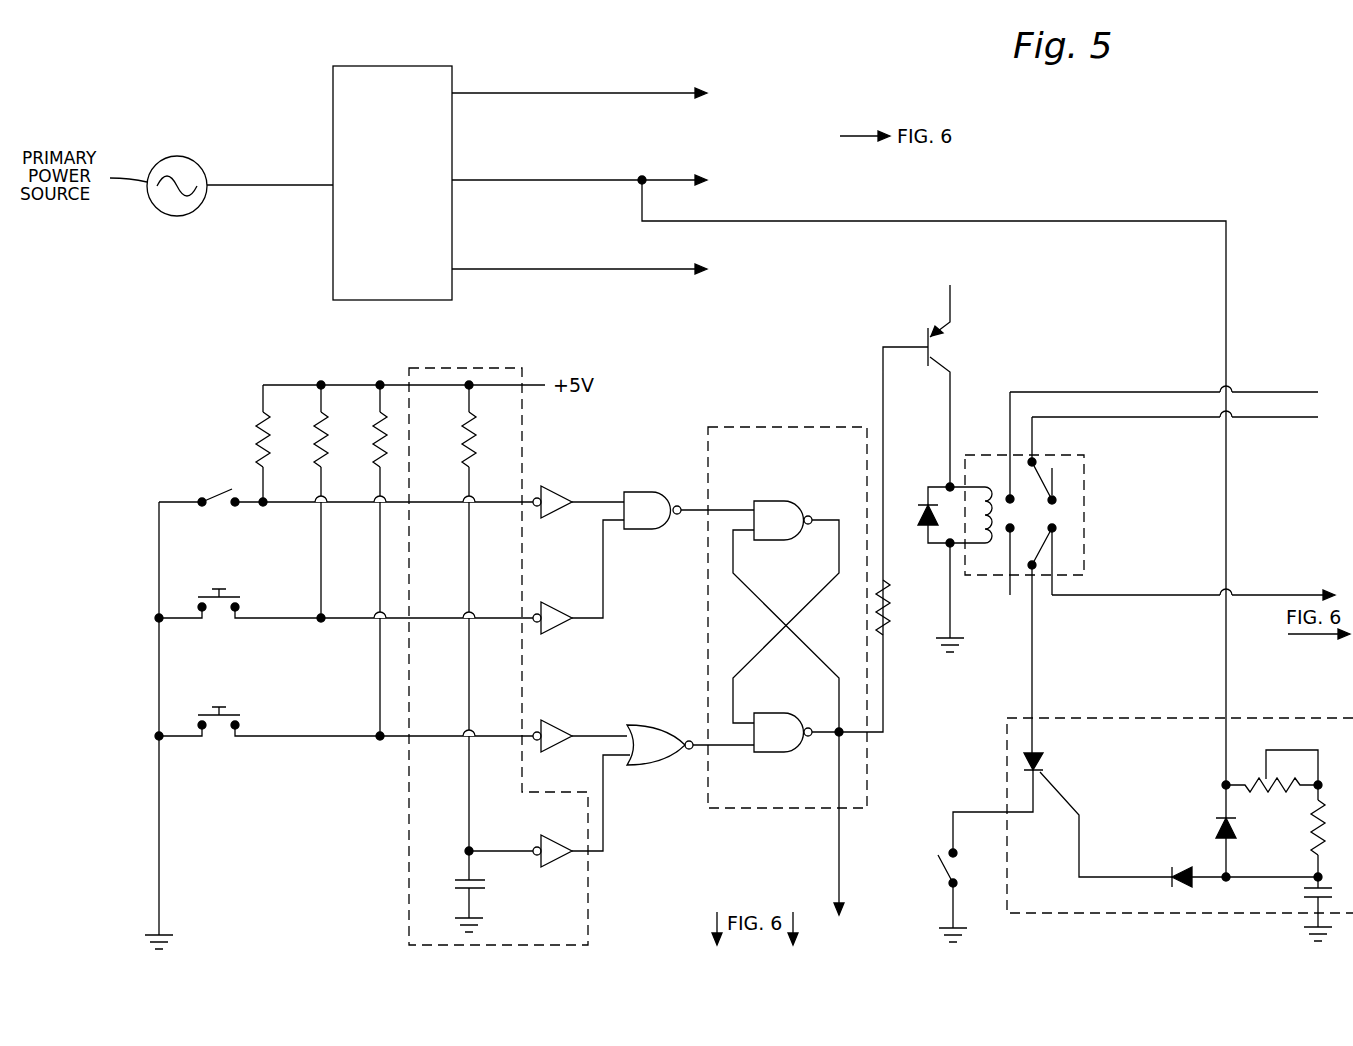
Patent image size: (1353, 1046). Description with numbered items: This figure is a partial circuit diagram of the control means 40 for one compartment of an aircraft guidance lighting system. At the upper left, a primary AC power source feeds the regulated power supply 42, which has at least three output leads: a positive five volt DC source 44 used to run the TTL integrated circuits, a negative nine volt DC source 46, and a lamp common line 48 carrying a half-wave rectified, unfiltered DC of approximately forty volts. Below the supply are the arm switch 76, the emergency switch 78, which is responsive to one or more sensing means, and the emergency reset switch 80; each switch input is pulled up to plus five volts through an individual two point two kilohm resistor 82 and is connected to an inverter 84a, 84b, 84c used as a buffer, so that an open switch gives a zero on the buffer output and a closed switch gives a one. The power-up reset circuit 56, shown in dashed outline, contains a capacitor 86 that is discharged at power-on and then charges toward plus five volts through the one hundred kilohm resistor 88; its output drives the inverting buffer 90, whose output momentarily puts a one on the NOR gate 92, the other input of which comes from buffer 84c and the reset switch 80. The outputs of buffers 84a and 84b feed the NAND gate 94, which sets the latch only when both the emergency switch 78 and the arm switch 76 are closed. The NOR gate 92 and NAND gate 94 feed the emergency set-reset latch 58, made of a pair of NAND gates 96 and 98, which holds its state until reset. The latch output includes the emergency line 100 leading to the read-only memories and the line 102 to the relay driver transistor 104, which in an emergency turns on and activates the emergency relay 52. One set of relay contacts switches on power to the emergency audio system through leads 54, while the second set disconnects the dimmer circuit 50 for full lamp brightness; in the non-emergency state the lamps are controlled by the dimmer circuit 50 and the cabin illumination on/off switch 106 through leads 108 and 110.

The control means 40 is at (1203, 154).
The regulated power supply 42 is at (333, 94).
The +5 volt DC source 44 is at (560, 93).
The −9 volt DC source 46 is at (558, 269).
The lamp common line 48 is at (662, 179).
The dimmer circuit 50 is at (1290, 717).
The emergency relay 52 is at (1084, 484).
The emergency audio circuit leads 54 is at (1250, 394).
The power-up reset circuit 56 is at (409, 893).
The emergency set-reset latch 58 is at (808, 426).
The arm switch 76 is at (220, 490).
The emergency switch 78 is at (206, 600).
The emergency reset switch 80 is at (206, 716).
The pull-up resistors 82 is at (376, 438).
The inverter 84a is at (552, 494).
The inverter 84b is at (552, 608).
The inverter 84c is at (552, 725).
The capacitor 86 is at (466, 874).
The resistor 88 is at (465, 438).
The inverting buffer 90 is at (558, 845).
The NOR gate 92 is at (641, 723).
The NAND gate 94 is at (647, 492).
The NAND gate 96 is at (767, 504).
The NAND gate 98 is at (775, 716).
The emergency line 100 is at (839, 856).
The line 102 is at (883, 664).
The relay driver transistor 104 is at (944, 346).
The cabin illumination on/off switch 106 is at (938, 877).
The lead 108 is at (1032, 632).
The lead 110 is at (1260, 594).